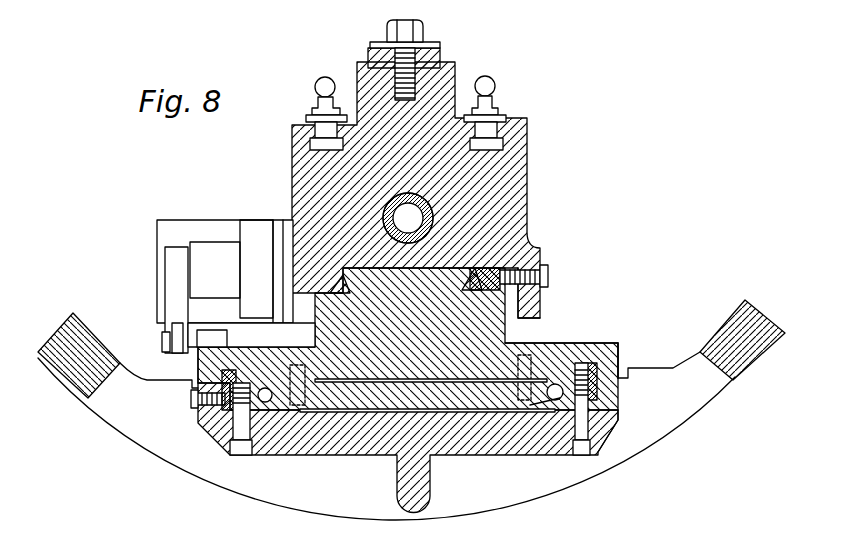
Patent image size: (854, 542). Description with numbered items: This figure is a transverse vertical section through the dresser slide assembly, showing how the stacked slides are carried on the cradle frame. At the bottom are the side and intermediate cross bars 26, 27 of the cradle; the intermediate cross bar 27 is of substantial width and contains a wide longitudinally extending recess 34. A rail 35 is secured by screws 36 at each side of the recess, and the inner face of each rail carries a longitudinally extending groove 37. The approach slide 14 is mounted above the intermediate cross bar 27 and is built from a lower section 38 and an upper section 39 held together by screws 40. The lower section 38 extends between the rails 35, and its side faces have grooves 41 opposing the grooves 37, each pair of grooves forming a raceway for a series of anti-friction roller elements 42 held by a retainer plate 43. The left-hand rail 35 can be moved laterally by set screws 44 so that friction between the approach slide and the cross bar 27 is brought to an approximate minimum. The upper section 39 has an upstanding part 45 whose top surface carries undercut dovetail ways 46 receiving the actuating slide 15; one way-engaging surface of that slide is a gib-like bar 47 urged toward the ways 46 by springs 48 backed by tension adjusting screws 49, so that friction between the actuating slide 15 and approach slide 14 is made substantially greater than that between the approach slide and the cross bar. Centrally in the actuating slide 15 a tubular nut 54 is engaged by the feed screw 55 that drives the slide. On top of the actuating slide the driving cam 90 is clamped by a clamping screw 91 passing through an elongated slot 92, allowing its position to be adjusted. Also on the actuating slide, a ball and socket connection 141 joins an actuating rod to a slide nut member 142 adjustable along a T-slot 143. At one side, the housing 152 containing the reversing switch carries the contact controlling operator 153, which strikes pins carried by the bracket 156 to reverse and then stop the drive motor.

The approach slide 14 is at (566, 338).
The actuating slide 15 is at (528, 208).
The side cross bars 26 is at (100, 352).
The intermediate cross bar 27 is at (356, 456).
The recess 34 is at (610, 427).
The rail 35 is at (204, 422).
The screws 36 is at (585, 452).
The groove 37 is at (252, 412).
The lower section 38 is at (462, 405).
The upper section 39 is at (440, 368).
The screws 40 is at (305, 378).
The grooves 41 is at (268, 388).
The anti-friction roller elements 42 is at (236, 380).
The retainer plate 43 is at (545, 402).
The set screws 44 is at (191, 400).
The upstanding part 45 is at (325, 335).
The dovetail ways 46 is at (340, 285).
The bar 47 is at (490, 266).
The springs 48 is at (527, 272).
The tension adjusting screws 49 is at (549, 274).
The tubular nut 54 is at (420, 200).
The feed screw 55 is at (424, 212).
The driving cam 90 is at (442, 58).
The clamping screw 91 is at (424, 33).
The slot 92 is at (416, 68).
The ball and socket connection 141 is at (309, 90).
The slide nut member 142 is at (308, 120).
The T-slot 143 is at (312, 148).
The housing 152 is at (172, 220).
The contact controlling operator 153 is at (172, 299).
The bracket 156 is at (227, 339).